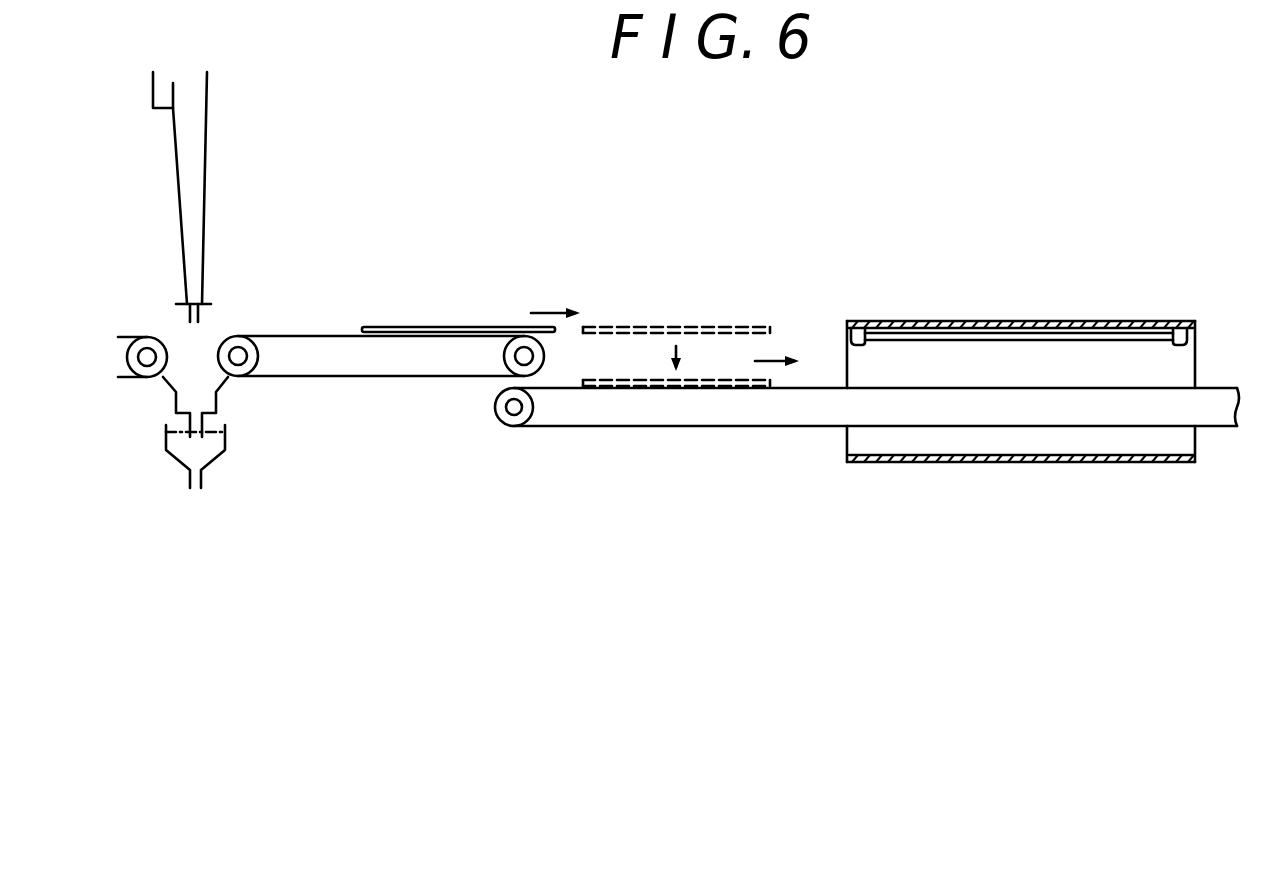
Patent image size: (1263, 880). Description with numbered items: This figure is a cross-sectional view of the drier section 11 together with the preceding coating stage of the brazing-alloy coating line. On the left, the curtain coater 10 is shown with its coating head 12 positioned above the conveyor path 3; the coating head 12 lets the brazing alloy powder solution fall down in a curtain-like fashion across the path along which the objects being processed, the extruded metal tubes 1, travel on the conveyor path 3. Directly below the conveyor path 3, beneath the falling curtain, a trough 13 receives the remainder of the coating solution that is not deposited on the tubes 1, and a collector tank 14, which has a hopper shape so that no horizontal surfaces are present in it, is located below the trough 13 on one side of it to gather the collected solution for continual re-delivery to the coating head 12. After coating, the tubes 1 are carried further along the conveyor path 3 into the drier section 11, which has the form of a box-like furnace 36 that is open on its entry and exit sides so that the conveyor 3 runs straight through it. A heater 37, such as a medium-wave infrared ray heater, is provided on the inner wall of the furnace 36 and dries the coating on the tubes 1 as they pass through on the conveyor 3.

The extruded metal tubes 1 is at (449, 326).
The conveyor path 3 is at (377, 377).
The curtain coater 10 is at (272, 279).
The drier section 11 is at (1021, 322).
The coating head 12 is at (152, 201).
The trough 13 is at (175, 400).
The collector tank 14 is at (167, 450).
The box-like furnace 36 is at (1128, 322).
The heater 37 is at (1072, 338).